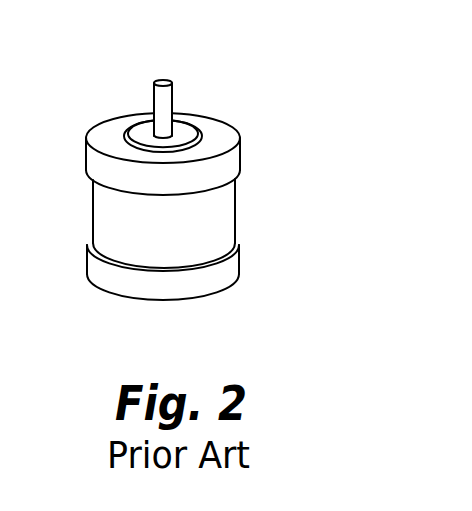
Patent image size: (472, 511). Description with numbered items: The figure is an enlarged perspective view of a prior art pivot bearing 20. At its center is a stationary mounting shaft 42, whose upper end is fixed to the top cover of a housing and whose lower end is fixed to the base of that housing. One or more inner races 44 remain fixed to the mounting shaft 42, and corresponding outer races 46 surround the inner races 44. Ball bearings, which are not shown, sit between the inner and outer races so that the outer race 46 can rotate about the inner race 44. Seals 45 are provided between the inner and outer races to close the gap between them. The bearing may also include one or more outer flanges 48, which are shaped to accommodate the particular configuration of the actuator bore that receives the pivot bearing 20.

The pivot bearing 20 is at (224, 166).
The mounting shaft 42 is at (166, 93).
The inner race 44 is at (145, 140).
The seal 45 is at (195, 132).
The outer race 46 is at (212, 212).
The outer flange 48 is at (222, 165).